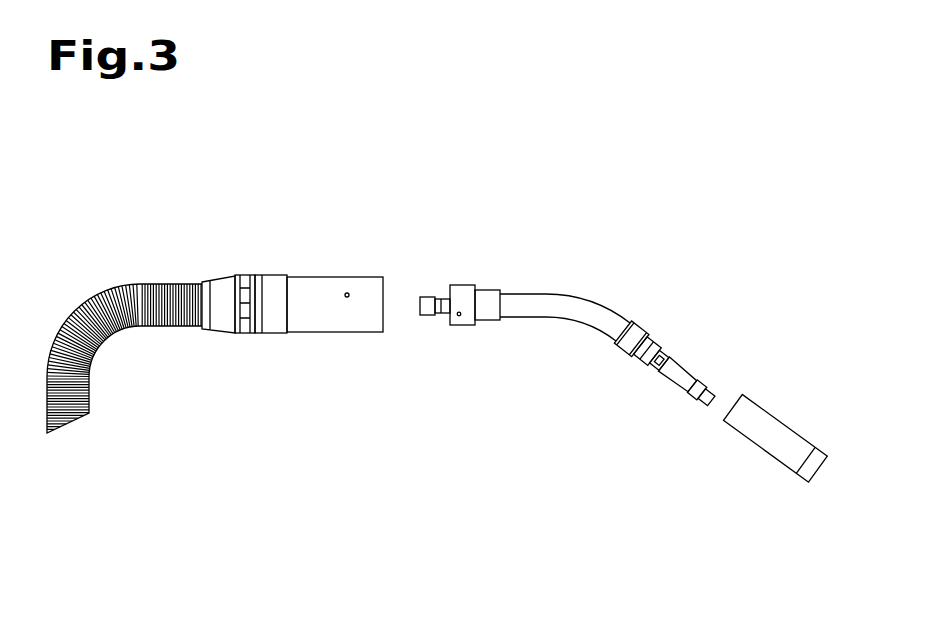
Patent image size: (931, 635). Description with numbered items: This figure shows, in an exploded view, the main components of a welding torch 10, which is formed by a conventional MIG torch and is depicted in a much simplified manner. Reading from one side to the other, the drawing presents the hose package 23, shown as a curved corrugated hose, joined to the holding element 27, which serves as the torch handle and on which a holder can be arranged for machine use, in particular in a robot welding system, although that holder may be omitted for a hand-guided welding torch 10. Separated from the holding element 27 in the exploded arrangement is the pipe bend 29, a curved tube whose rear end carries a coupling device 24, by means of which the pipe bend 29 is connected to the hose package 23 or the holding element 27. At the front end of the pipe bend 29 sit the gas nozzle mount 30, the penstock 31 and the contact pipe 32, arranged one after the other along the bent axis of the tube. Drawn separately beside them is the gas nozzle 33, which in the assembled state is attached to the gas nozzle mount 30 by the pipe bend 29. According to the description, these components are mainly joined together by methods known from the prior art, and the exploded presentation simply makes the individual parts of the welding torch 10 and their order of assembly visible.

The welding torch 10 is at (660, 213).
The hose package 23 is at (127, 288).
The holding element 27 is at (365, 290).
The coupling device 24 is at (430, 353).
The pipe bend 29 is at (545, 308).
The gas nozzle mount 30 is at (653, 320).
The penstock 31 is at (663, 380).
The contact pipe 32 is at (695, 390).
The gas nozzle 33 is at (763, 435).